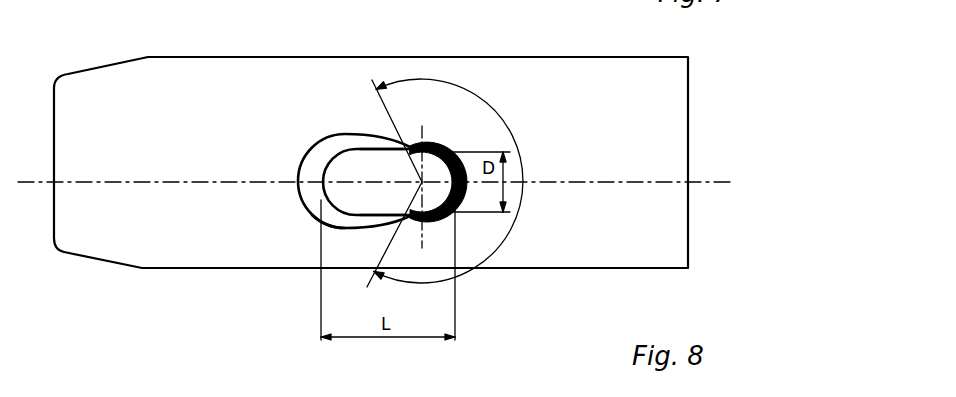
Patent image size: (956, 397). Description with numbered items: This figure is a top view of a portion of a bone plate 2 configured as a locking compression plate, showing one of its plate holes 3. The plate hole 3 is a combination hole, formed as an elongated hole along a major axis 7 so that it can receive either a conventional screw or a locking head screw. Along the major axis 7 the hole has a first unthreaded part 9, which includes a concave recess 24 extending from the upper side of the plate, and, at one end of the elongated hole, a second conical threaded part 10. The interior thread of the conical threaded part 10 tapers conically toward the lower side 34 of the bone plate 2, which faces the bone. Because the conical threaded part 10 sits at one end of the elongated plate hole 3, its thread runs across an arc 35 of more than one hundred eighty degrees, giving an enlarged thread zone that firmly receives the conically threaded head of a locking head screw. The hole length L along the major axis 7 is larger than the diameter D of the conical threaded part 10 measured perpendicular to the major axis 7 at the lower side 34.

The bone plate 2 is at (173, 270).
The plate hole 3 is at (355, 146).
The major axis 7 is at (320, 206).
The first unthreaded part 9 is at (323, 140).
The conical threaded part 10 is at (432, 178).
The concave recess 24 is at (370, 222).
The lower side 34 is at (350, 170).
The arc 35 is at (454, 183).